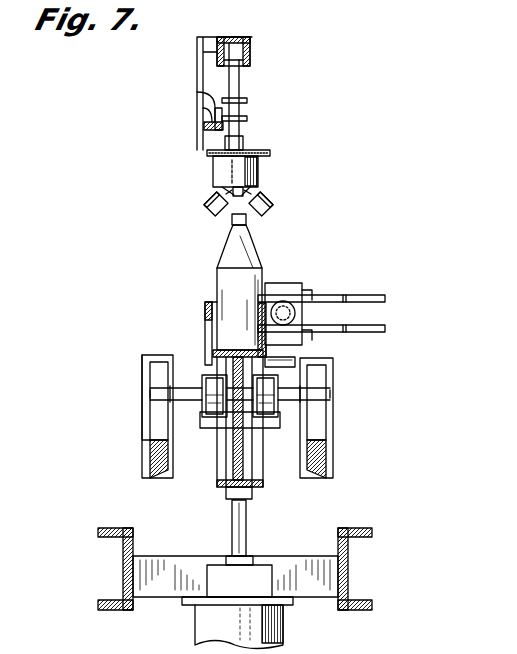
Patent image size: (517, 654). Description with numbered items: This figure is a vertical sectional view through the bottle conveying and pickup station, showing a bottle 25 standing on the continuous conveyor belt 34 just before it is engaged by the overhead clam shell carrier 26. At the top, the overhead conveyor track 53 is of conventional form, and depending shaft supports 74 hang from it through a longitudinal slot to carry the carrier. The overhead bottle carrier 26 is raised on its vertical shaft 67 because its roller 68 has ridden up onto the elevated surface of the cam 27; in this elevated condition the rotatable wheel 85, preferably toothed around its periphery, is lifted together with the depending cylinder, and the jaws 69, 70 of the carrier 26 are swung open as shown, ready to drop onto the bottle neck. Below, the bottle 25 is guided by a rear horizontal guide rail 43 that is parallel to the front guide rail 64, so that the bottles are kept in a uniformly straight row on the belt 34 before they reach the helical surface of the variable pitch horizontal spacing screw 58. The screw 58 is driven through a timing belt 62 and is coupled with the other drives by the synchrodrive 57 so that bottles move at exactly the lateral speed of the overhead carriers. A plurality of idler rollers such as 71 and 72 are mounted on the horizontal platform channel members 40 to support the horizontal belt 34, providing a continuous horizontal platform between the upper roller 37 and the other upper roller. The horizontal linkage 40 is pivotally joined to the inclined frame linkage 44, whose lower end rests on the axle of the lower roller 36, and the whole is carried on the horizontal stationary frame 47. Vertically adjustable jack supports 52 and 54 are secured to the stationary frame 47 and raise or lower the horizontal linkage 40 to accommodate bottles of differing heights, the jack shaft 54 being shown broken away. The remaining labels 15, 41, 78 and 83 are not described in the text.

The cap housing 15 is at (264, 48).
The overhead conveyor track 53 is at (233, 37).
The depending shaft supports 74 is at (240, 90).
The roller 68 is at (205, 108).
The cam 27 is at (203, 118).
The vertical shaft 67 is at (244, 128).
The rotatable wheel 85 is at (270, 153).
The overhead bottle carrier 26 is at (268, 146).
The lower roller 36 is at (215, 172).
The bottle gripping member 69 is at (208, 210).
The bottle gripping member 70 is at (268, 197).
The bottle 25 is at (268, 248).
The front horizontal guide rail 64 is at (205, 305).
The continuous conveyor belt 34 is at (218, 350).
The synchrodrive 57 is at (288, 283).
The variable pitch horizontal spacing screw 58 is at (305, 287).
The timing belt 62 is at (346, 295).
The rear horizontal guide rail 43 is at (298, 360).
The upper roller 37 is at (238, 440).
The horizontal frame linkage 40 is at (270, 432).
The axle 41 is at (255, 392).
The idler roller 71 is at (218, 420).
The idler roller 72 is at (270, 420).
The second inclined rigid frame linkage 44 is at (148, 462).
The horizontal stationary frame 47 is at (112, 528).
The vertically adjustable jack support 52 is at (246, 518).
The base platform 78 is at (270, 605).
The vertically adjustable jack support 54 is at (66, 648).
The base member 83 is at (132, 648).